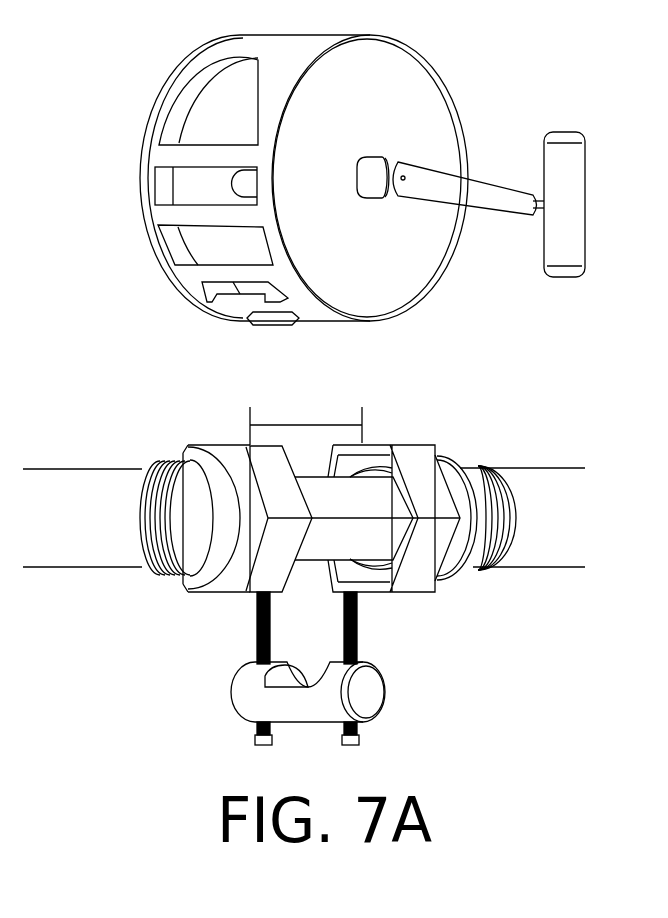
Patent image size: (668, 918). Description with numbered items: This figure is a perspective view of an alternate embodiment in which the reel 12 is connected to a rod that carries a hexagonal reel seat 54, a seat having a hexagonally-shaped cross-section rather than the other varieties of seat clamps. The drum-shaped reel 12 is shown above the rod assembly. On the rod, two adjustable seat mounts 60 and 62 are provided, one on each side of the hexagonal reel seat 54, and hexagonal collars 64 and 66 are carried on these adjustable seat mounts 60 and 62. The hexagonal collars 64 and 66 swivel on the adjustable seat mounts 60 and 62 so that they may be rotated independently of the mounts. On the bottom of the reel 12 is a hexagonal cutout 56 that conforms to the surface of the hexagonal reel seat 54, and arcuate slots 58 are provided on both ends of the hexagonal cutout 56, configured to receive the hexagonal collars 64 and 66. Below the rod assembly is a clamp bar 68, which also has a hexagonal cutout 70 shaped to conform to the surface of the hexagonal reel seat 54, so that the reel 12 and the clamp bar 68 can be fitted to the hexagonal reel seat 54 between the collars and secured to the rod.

The reel 12 is at (425, 117).
The hexagonal reel seat 54 is at (313, 425).
The hexagonal cutout 56 is at (277, 318).
The arcuate slots 58 is at (218, 286).
The adjustable seat mount 60 is at (470, 543).
The adjustable seat mount 62 is at (220, 562).
The hexagonal collar 64 is at (425, 572).
The hexagonal collar 66 is at (276, 562).
The clamp bar 68 is at (363, 698).
The hexagonal cutout 70 is at (280, 677).